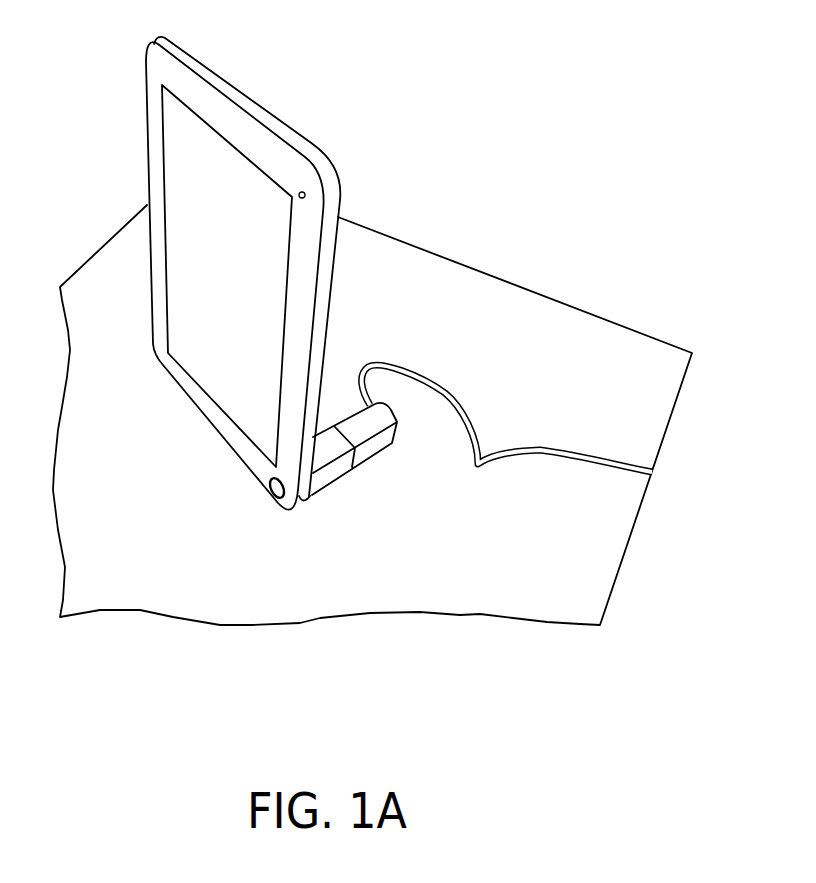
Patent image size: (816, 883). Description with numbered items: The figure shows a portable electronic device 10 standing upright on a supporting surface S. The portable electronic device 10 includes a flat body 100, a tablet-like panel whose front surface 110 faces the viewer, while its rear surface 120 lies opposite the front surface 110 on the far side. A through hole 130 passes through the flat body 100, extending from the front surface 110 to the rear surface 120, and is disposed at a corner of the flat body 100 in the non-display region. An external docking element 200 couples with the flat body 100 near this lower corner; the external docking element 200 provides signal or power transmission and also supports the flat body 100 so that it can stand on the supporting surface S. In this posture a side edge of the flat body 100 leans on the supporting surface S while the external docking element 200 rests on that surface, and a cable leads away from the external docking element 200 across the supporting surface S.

The portable electronic device 10 is at (375, 283).
The flat body 100 is at (152, 70).
The front surface 110 is at (197, 174).
The rear surface 120 is at (355, 172).
The through hole 130 is at (274, 514).
The external docking element 200 is at (368, 450).
The supporting surface S is at (532, 344).